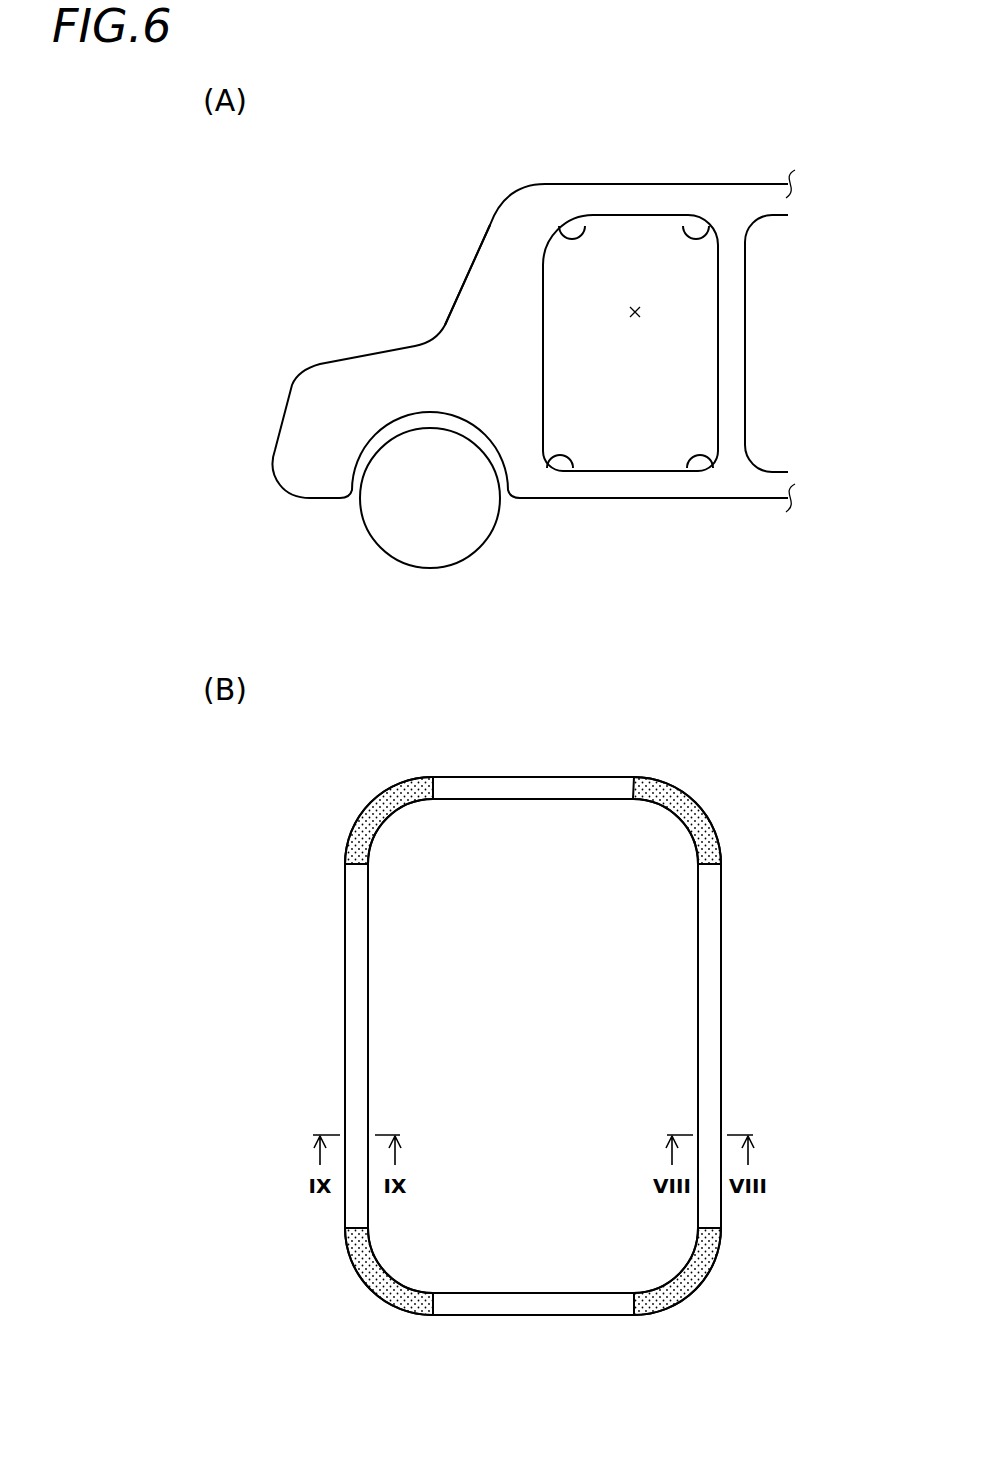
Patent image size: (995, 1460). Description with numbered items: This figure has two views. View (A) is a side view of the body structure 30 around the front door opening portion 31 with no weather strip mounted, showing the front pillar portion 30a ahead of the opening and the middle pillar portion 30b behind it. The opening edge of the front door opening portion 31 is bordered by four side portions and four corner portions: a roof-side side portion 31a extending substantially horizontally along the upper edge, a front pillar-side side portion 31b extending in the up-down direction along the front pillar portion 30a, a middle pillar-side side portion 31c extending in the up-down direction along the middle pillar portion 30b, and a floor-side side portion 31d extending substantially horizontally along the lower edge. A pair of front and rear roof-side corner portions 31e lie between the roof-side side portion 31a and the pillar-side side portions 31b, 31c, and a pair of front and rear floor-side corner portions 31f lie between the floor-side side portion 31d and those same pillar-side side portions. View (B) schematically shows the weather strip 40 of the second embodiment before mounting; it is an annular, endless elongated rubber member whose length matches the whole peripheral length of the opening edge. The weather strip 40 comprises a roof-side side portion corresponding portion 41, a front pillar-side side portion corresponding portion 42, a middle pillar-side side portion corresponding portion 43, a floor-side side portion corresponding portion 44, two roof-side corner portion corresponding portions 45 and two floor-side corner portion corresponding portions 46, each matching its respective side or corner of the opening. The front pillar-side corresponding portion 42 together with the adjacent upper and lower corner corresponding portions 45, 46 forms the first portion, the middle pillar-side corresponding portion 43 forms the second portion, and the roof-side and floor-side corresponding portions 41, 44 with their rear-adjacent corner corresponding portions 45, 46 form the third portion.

The vehicle body 30 is at (373, 297).
The front pillar portion 30a is at (500, 275).
The middle pillar portion 30b is at (733, 340).
The front door opening portion 31 is at (640, 310).
The roof-side side portion 31a is at (648, 217).
The front pillar-side side portion 31b is at (544, 352).
The middle pillar-side side portion 31c is at (717, 372).
The floor-side side portion 31d is at (635, 470).
The roof-side corner portion 31e is at (576, 222).
The floor-side corner portion 31f is at (565, 472).
The weather strip 40 is at (753, 957).
The roof-side side portion corresponding portion 41 is at (518, 788).
The front pillar-side side portion corresponding portion 42 is at (358, 1025).
The middle pillar-side side portion corresponding portion 43 is at (707, 1020).
The floor-side side portion corresponding portion 44 is at (537, 1303).
The roof-side corner portion corresponding portion 45 is at (386, 804).
The floor-side corner portion corresponding portion 46 is at (384, 1290).